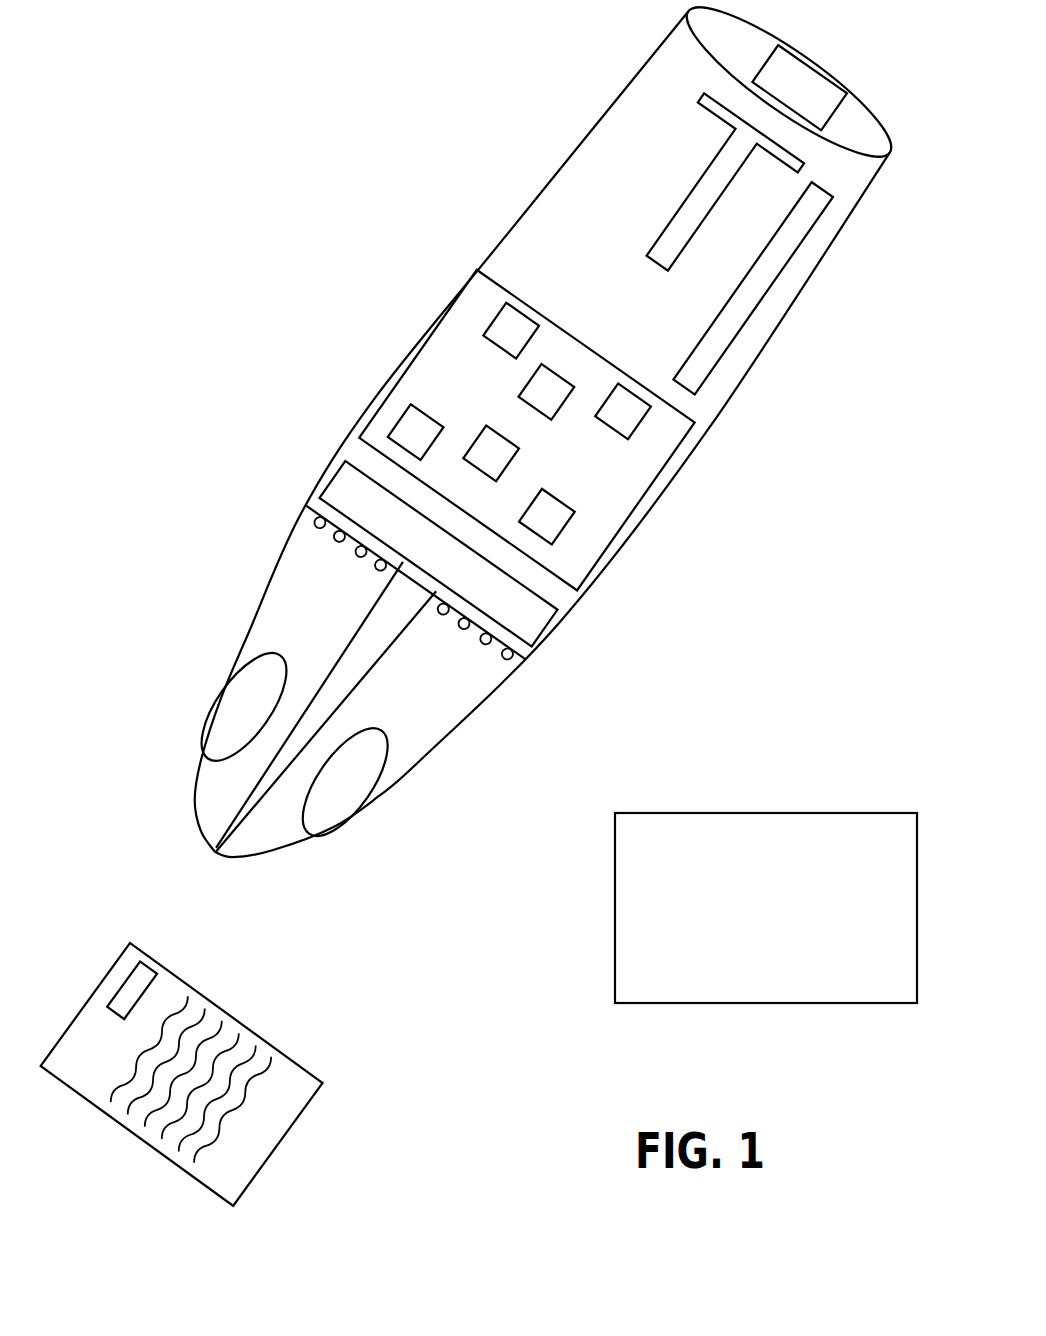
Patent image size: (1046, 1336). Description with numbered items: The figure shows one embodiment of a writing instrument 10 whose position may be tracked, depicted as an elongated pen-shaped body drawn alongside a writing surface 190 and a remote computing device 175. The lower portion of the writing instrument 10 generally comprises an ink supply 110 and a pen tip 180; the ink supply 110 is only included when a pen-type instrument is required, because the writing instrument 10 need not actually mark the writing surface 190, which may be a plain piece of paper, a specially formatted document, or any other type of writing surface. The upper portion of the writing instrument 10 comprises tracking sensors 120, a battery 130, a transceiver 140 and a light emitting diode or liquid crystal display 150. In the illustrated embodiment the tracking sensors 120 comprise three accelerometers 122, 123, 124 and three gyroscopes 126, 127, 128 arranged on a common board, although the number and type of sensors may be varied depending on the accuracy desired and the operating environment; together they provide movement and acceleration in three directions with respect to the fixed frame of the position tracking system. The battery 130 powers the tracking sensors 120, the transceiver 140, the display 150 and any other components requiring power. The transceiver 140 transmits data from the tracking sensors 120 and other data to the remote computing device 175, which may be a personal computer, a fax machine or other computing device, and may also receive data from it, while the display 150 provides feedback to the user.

The writing instrument 10 is at (332, 463).
The ink supply 110 is at (538, 627).
The tracking sensors 120 is at (697, 426).
The accelerometer 122 is at (560, 415).
The accelerometer 123 is at (643, 425).
The accelerometer 124 is at (492, 323).
The gyroscope 126 is at (563, 528).
The gyroscope 127 is at (480, 440).
The gyroscope 128 is at (403, 422).
The battery 130 is at (727, 342).
The transceiver 140 is at (692, 188).
The LED/LCD display 150 is at (862, 27).
The remote computing device 175 is at (907, 999).
The pen tip 180 is at (210, 853).
The writing surface 190 is at (308, 1067).